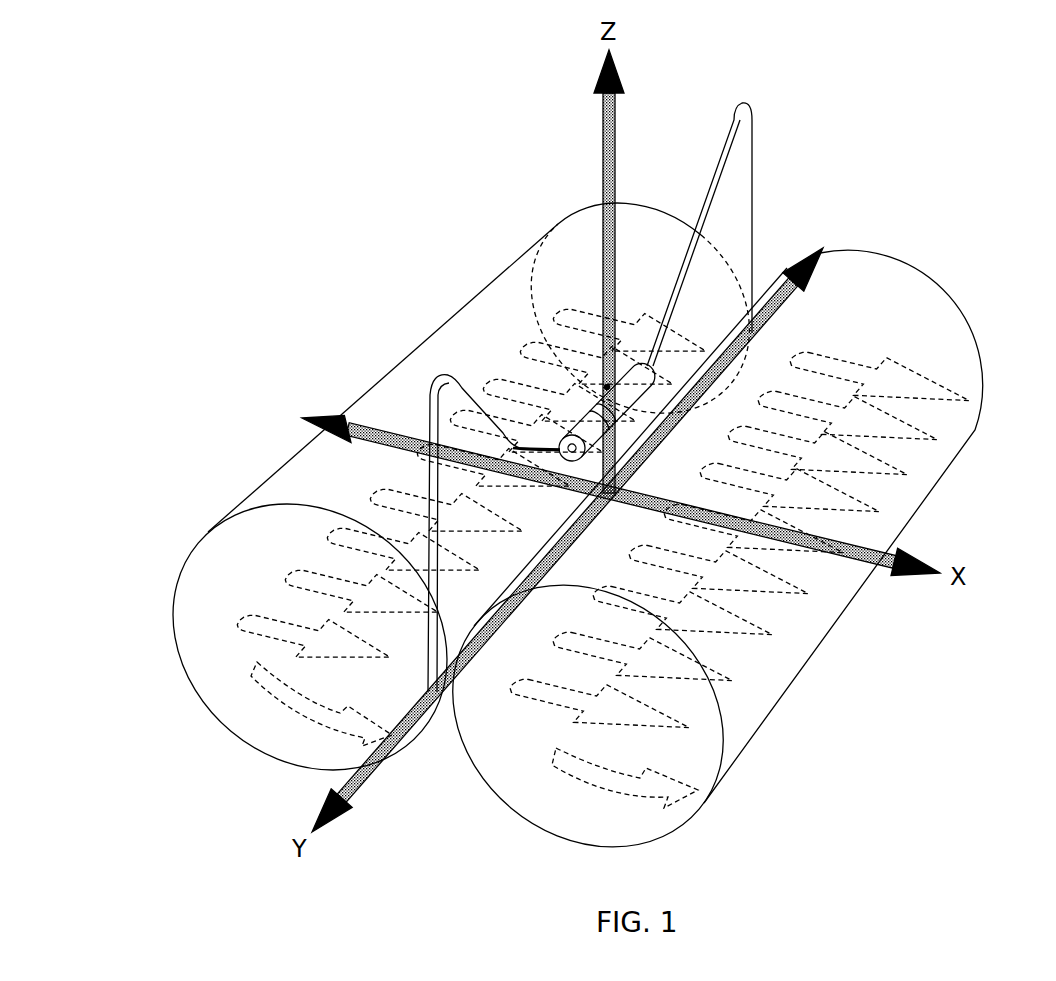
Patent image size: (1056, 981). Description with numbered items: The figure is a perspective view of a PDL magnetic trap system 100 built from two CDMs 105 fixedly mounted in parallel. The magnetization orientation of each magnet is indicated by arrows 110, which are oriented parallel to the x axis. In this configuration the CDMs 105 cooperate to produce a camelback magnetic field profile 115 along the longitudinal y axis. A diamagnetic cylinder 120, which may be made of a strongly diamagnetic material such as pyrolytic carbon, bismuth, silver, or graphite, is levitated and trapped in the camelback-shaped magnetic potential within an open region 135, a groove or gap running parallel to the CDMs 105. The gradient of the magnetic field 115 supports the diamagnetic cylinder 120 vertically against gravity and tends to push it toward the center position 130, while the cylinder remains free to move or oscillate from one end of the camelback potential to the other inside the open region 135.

The PDL magnetic trap system 100 is at (106, 283).
The CDMs 105 is at (252, 698).
The arrows 110 is at (890, 383).
The camelback magnetic field profile 115 is at (740, 210).
The diamagnetic cylinder 120 is at (593, 423).
The center position 130 is at (607, 387).
The open region 135 is at (442, 730).